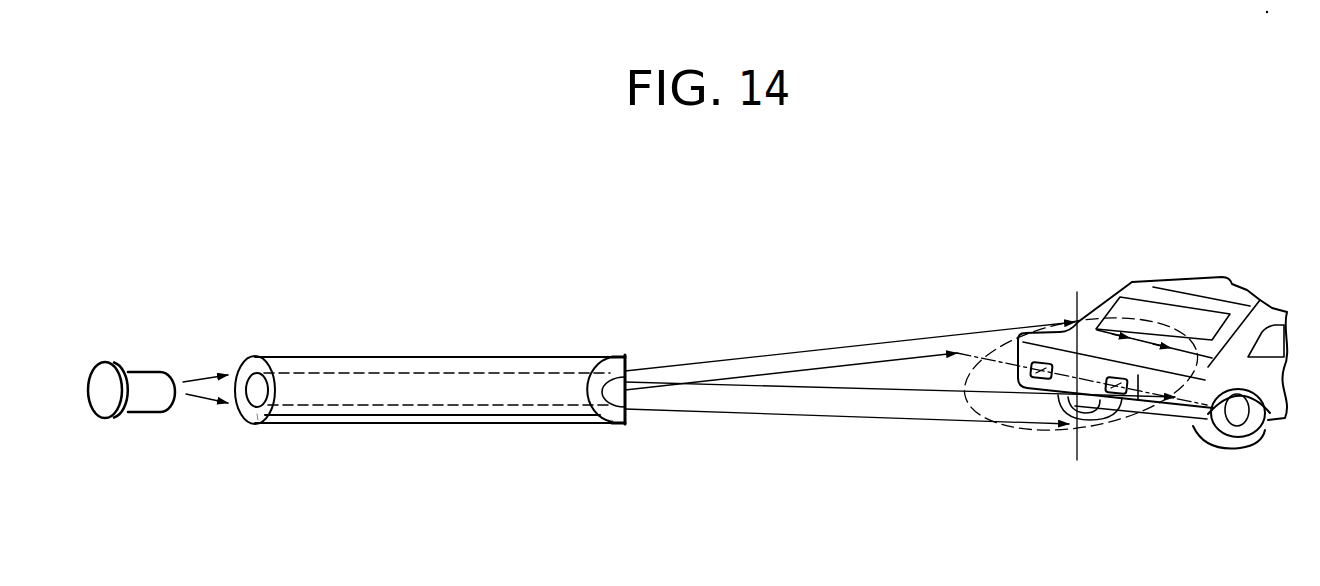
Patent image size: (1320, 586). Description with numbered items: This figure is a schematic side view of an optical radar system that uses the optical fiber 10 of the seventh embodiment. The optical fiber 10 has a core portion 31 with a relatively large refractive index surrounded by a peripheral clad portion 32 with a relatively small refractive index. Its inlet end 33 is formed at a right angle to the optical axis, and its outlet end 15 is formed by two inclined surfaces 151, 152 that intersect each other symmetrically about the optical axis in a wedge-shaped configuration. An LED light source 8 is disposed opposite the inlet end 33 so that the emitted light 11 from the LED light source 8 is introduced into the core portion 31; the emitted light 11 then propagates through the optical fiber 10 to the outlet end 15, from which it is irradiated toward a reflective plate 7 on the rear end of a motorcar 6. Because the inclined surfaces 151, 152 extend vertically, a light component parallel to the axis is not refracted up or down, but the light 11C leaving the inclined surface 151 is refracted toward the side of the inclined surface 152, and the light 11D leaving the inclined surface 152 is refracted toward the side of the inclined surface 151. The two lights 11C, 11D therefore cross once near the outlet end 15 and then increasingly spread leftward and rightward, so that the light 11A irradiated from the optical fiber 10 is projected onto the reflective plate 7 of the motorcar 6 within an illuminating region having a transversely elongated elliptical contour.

The motorcar 6 is at (1185, 283).
The reflective plate 7 is at (1036, 379).
The LED light source 8 is at (148, 380).
The optical fiber 10 is at (422, 353).
The emitted light 11 is at (218, 403).
The irradiated light 11A is at (863, 333).
The light irradiated from inclined surface 151 11C is at (753, 377).
The light irradiated from inclined surface 152 11D is at (848, 390).
The outlet end 15 is at (630, 360).
The core portion 31 is at (260, 390).
The clad portion 32 is at (257, 413).
The inlet end 33 is at (247, 367).
The inclined surface 151 is at (613, 413).
The inclined surface 152 is at (607, 353).